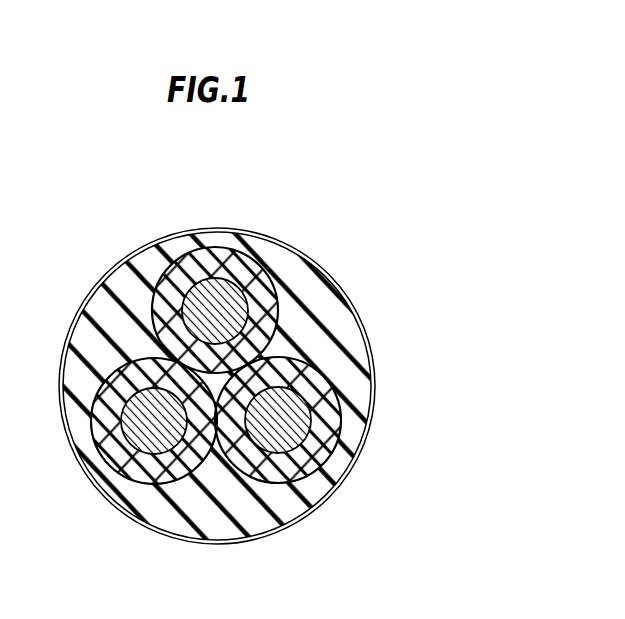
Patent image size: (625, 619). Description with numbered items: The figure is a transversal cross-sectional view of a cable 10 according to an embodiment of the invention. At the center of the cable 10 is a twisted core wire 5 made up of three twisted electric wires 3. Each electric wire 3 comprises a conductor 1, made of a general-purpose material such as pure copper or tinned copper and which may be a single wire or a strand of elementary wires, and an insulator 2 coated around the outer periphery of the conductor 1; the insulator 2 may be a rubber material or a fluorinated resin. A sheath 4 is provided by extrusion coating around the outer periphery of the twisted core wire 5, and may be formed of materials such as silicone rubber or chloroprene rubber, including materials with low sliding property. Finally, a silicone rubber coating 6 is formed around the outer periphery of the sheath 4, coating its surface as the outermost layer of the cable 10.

The conductor 1 is at (225, 303).
The insulator 2 is at (262, 323).
The electric wire 3 is at (255, 355).
The sheath 4 is at (282, 498).
The twisted core wire 5 is at (268, 355).
The silicone rubber coating 6 is at (363, 427).
The cable 10 is at (242, 395).